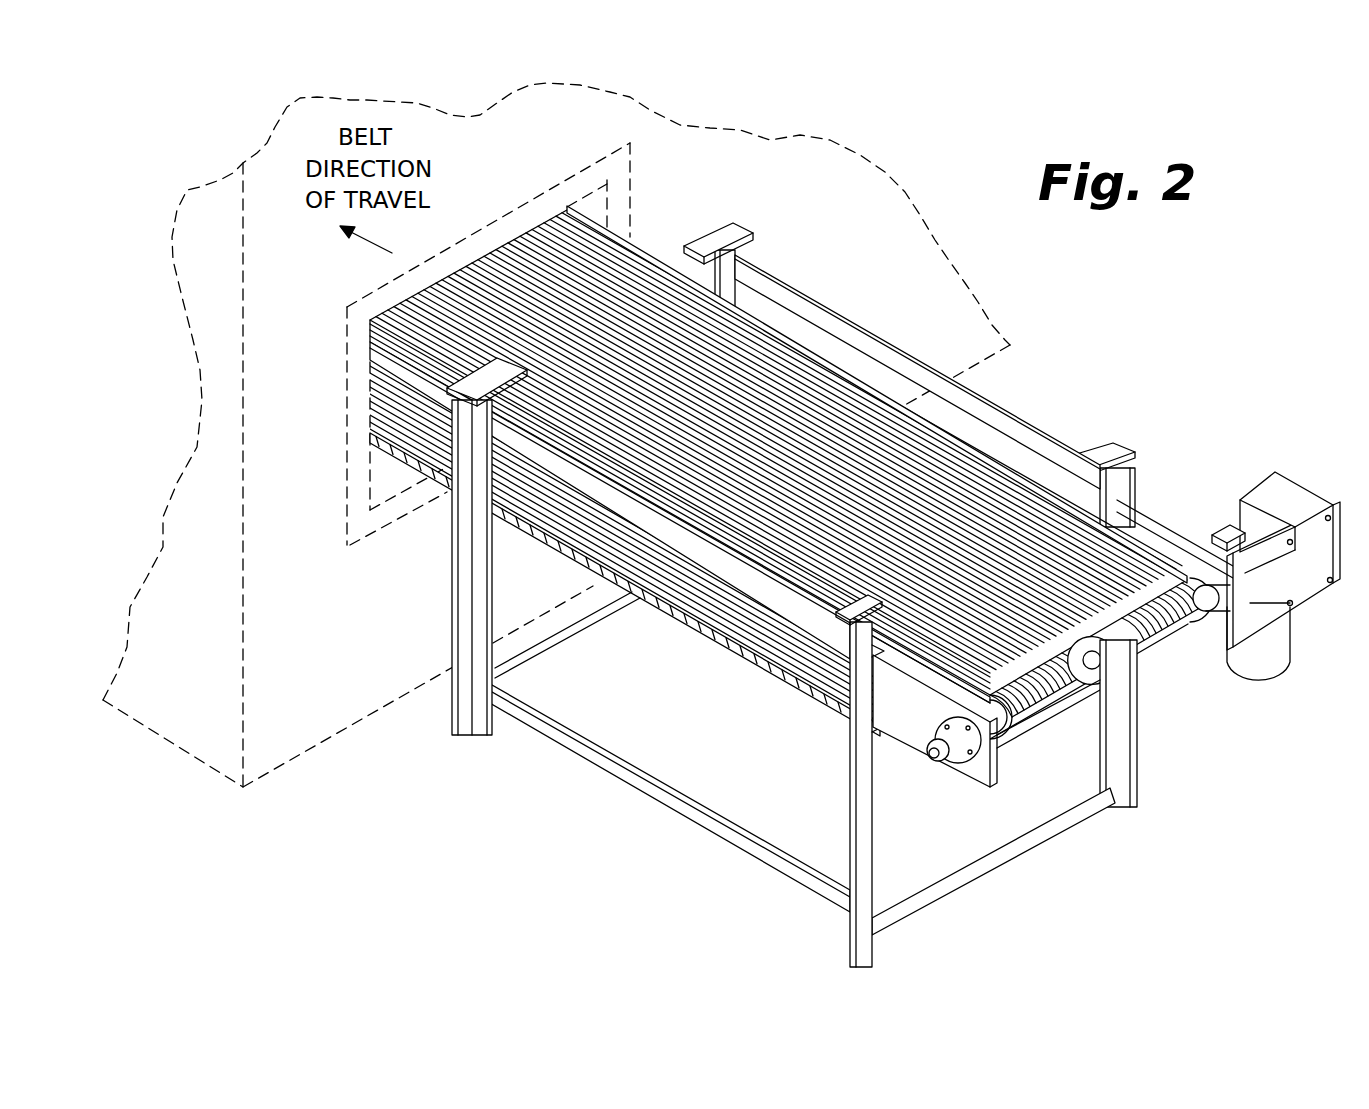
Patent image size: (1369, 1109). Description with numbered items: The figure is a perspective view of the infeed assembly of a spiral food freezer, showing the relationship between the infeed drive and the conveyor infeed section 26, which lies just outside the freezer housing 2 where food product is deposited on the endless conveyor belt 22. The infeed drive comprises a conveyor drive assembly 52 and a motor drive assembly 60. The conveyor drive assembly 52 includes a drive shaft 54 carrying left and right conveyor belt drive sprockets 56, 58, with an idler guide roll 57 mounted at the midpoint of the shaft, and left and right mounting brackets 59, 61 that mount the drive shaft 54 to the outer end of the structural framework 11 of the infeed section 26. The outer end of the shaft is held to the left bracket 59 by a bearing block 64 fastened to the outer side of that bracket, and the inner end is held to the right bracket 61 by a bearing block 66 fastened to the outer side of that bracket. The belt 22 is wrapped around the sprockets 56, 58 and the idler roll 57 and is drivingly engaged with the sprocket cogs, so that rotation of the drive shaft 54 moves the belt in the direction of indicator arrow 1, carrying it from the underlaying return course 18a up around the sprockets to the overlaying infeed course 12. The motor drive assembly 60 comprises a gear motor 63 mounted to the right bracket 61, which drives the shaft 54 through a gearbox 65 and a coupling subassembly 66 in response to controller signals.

The indicator arrow 1 is at (450, 165).
The freezer housing 2 is at (243, 607).
The structural framework 11 is at (684, 774).
The infeed course 12 is at (642, 284).
The return course final portion 18a is at (587, 532).
The conveyor belt 22 is at (984, 480).
The infeed section 26 is at (430, 575).
The conveyor drive assembly 52 is at (958, 808).
The drive shaft 54 is at (927, 753).
The left conveyor belt drive sprocket 56 is at (1027, 730).
The idler guide roll 57 is at (1100, 677).
The right conveyor belt drive sprocket 58 is at (1247, 640).
The left mounting bracket 59 is at (990, 790).
The motor drive assembly 60 is at (1285, 462).
The right mounting bracket 61 is at (1330, 572).
The gear motor 63 is at (1297, 647).
The bearing block 64 is at (955, 716).
The gearbox 65 is at (1282, 492).
The bearing block 66 is at (1237, 548).